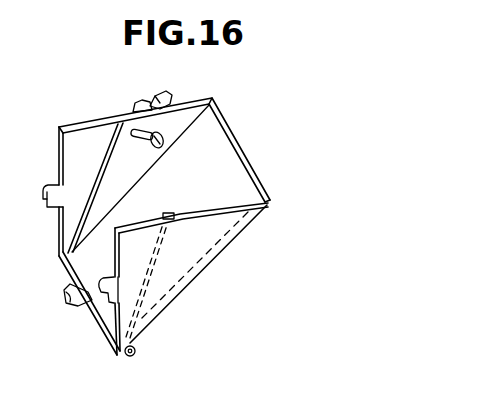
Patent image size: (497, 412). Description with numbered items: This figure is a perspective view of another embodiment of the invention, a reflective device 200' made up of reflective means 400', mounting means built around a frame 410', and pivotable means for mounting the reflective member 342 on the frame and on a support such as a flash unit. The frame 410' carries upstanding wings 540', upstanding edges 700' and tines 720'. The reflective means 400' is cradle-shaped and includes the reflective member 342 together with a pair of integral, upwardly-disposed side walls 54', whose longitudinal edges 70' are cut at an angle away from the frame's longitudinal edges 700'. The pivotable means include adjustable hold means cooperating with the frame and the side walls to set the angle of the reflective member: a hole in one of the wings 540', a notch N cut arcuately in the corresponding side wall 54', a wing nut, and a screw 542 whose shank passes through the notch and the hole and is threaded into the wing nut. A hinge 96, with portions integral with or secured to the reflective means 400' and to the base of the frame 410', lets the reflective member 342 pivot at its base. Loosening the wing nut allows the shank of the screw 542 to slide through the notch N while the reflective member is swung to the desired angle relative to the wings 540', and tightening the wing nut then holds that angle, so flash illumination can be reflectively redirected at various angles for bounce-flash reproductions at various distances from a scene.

The reflective means 400' is at (183, 150).
The frame 410' is at (80, 165).
The upstanding wings 540' is at (165, 177).
The side walls 54' is at (144, 189).
The longitudinal edges 70' is at (117, 269).
The upstanding edges 700' is at (35, 174).
The tines 720' is at (59, 266).
The reflective device 200' is at (191, 279).
The screw 542 is at (160, 146).
The notch N is at (136, 139).
The reflective member 342 is at (206, 196).
The hinge 96 is at (136, 355).